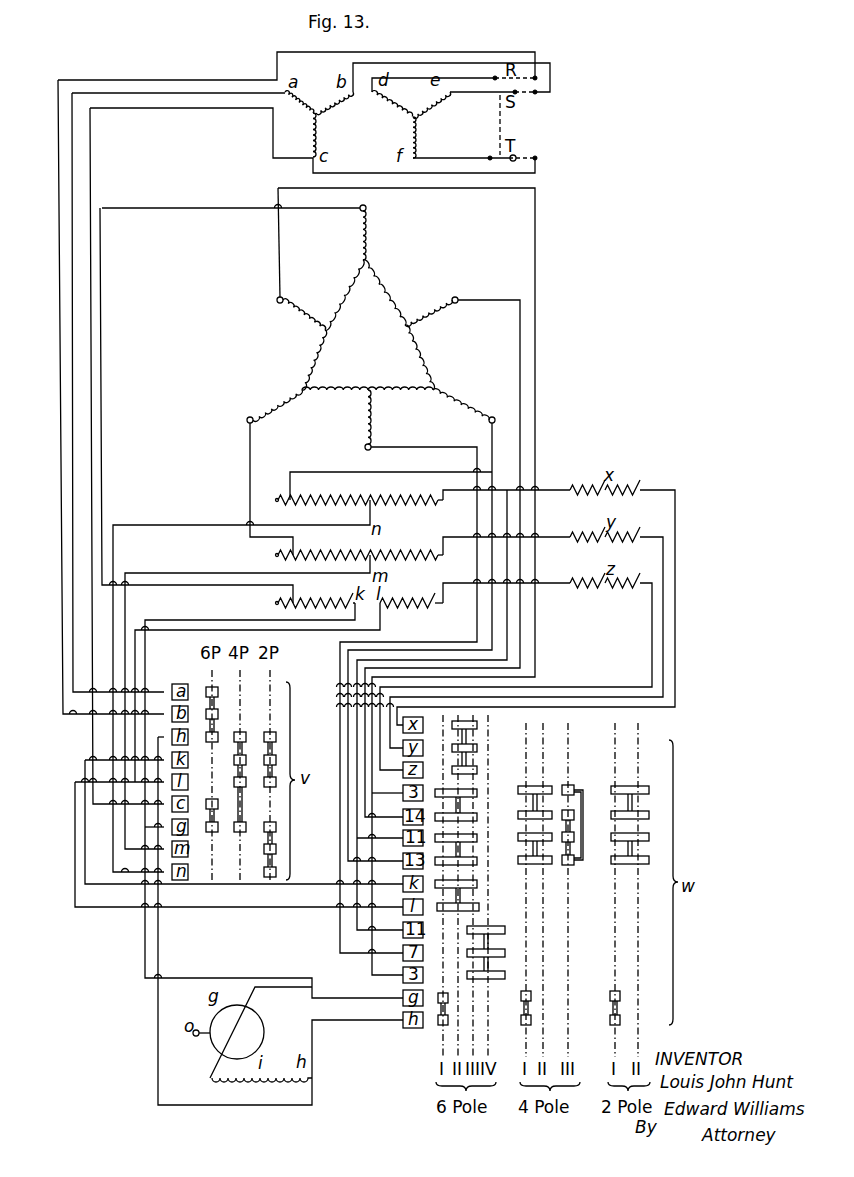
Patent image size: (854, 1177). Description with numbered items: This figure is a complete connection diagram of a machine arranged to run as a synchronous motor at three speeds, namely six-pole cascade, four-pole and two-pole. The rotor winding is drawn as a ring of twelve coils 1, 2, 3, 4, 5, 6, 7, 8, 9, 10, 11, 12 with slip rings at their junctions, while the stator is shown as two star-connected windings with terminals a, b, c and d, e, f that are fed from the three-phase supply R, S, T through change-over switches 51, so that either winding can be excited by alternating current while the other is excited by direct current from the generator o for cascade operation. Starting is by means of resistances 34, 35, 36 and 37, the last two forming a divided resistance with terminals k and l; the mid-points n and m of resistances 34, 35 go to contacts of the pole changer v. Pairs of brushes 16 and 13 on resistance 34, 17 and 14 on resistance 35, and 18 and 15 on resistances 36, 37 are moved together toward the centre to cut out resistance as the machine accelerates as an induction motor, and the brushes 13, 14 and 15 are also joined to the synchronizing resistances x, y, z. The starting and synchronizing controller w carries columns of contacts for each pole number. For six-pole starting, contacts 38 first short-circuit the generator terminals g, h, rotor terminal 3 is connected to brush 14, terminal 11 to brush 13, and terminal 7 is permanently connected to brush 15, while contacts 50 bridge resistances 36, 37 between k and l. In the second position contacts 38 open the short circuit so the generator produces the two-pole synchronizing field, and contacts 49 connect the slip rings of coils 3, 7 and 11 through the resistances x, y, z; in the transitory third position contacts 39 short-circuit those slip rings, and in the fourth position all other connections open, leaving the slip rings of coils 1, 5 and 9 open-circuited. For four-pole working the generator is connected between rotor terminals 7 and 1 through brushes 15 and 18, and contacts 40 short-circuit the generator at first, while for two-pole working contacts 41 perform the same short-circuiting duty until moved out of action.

The rotor coil 1 is at (364, 224).
The rotor coil 2 is at (385, 291).
The rotor coil 3 is at (442, 546).
The rotor coil 4 is at (420, 357).
The rotor coil 5 is at (399, 620).
The rotor coil 6 is at (400, 401).
The rotor coil 7 is at (408, 671).
The rotor coil 8 is at (335, 401).
The rotor coil 9 is at (267, 472).
The rotor coil 10 is at (308, 360).
The rotor coil 11 is at (302, 304).
The rotor coil 12 is at (345, 295).
The brush 13 is at (495, 487).
The brush 14 is at (495, 538).
The brush 15 is at (495, 585).
The brush 16 is at (360, 489).
The brush 17 is at (360, 541).
The brush 18 is at (316, 591).
The starting resistance 34 is at (413, 499).
The starting resistance 35 is at (414, 553).
The divided starting resistance 36 is at (334, 591).
The divided starting resistance 37 is at (420, 600).
The connected contacts 38 is at (441, 994).
The contacts 39 is at (492, 928).
The contacts 40 is at (521, 996).
The contacts 41 is at (610, 995).
The contacts 49 is at (477, 750).
The contacts 50 is at (478, 885).
The change-over switches 51 is at (489, 125).